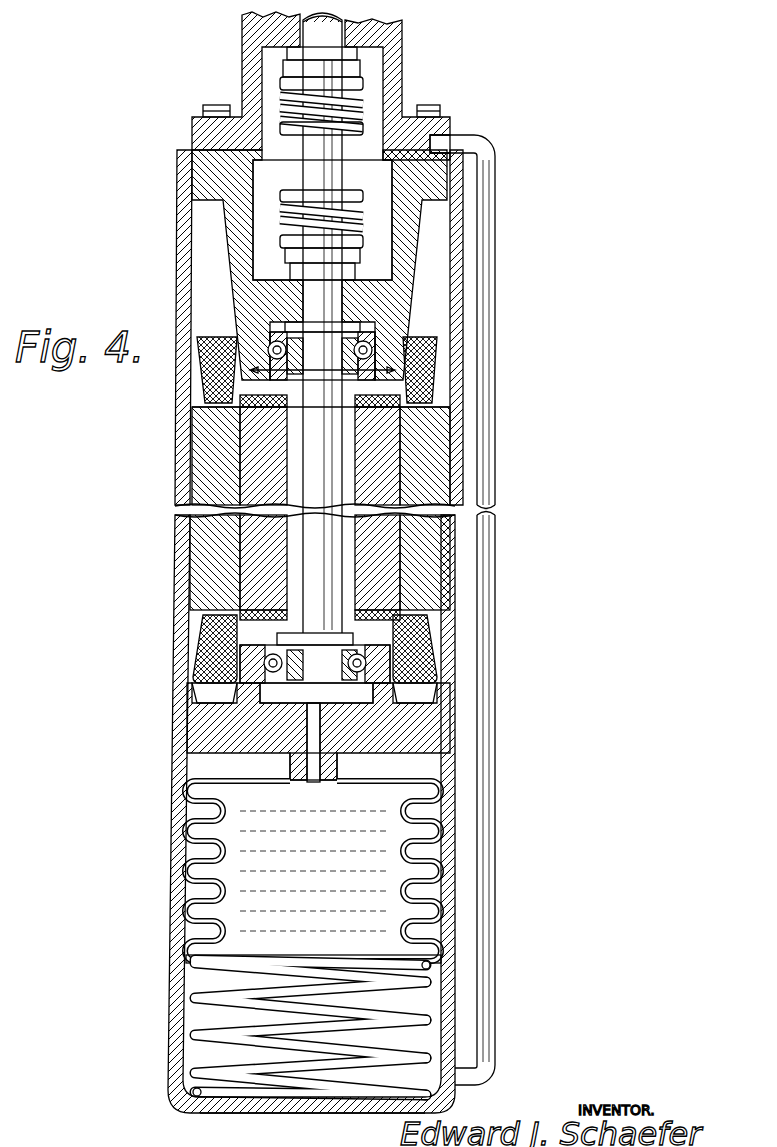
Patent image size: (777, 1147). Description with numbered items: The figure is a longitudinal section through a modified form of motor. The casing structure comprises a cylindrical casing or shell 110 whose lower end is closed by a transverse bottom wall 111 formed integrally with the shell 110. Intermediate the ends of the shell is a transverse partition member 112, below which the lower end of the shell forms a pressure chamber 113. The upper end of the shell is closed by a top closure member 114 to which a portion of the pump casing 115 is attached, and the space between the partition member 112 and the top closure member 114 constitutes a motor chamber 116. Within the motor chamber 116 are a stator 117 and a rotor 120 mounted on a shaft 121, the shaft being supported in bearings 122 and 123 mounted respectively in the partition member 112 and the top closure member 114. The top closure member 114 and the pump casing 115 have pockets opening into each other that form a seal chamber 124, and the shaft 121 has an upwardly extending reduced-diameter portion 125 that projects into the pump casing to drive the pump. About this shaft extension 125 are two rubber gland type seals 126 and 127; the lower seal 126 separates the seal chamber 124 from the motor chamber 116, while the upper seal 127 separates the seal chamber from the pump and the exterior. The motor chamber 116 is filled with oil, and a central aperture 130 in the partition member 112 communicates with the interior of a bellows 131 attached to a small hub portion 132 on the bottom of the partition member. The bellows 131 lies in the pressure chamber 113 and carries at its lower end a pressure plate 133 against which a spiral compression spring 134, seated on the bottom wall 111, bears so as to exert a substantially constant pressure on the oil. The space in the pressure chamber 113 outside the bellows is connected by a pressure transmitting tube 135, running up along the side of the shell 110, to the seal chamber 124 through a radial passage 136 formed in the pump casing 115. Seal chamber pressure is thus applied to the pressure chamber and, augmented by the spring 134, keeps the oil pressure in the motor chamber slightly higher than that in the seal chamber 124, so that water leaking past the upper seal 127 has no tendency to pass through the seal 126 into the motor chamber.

The cylindrical casing or shell 110 is at (182, 443).
The transverse bottom wall 111 is at (222, 1103).
The transverse partition member 112 is at (205, 722).
The pressure chamber 113 is at (182, 982).
The top closure member 114 is at (185, 175).
The pump casing 115 is at (192, 128).
The motor chamber 116 is at (196, 269).
The stator 117 is at (186, 542).
The rotor 120 is at (262, 566).
The shaft 121 is at (300, 468).
The bearing 122 is at (273, 661).
The bearing 123 is at (268, 340).
The seal chamber 124 is at (262, 210).
The shaft extension 125 is at (325, 178).
The seal 126 is at (367, 243).
The seal 127 is at (372, 89).
The central aperture 130 is at (323, 733).
The bellows 131 is at (215, 840).
The hub portion 132 is at (290, 768).
The pressure plate 133 is at (195, 948).
The spiral compression spring 134 is at (200, 1033).
The pressure transmitting tube 135 is at (482, 638).
The radial passage 136 is at (433, 137).